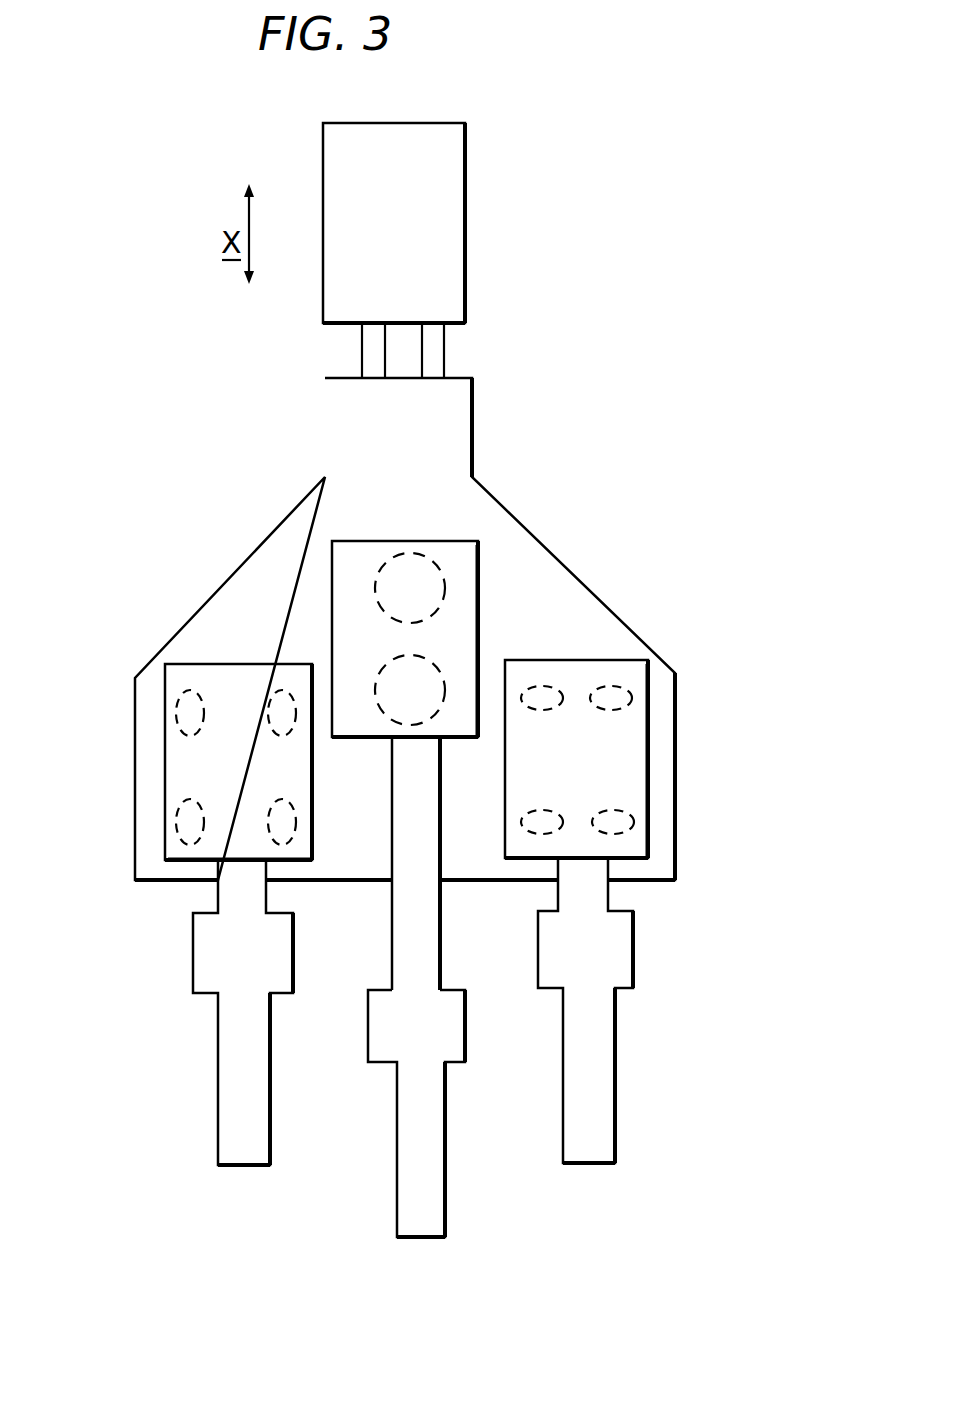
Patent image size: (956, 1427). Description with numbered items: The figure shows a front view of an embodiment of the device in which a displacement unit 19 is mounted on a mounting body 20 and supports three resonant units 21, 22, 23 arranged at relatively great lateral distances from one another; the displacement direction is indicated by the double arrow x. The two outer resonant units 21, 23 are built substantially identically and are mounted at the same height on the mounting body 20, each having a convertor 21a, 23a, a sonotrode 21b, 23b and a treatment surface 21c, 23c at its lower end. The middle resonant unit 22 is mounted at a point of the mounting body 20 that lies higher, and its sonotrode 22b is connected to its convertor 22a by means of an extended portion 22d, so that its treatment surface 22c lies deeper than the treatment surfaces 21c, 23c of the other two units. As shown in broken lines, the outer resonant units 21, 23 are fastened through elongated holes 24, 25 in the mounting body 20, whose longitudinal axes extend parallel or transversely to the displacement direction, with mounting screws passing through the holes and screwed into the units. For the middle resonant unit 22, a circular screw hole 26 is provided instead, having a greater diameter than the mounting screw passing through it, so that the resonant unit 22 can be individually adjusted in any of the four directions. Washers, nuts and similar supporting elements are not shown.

The displacement unit 19 is at (482, 205).
The mounting body 20 is at (590, 627).
The resonant unit 21 is at (158, 773).
The convertor 21a is at (215, 840).
The sonotrode 21b is at (237, 1041).
The treatment surface 21c is at (243, 1170).
The resonant unit 22 is at (322, 611).
The convertor 22a is at (453, 647).
The sonotrode 22b is at (430, 1093).
The treatment surface 22c is at (437, 1242).
The extended portion 22d is at (425, 905).
The resonant unit 23 is at (660, 733).
The convertor 23a is at (617, 787).
The sonotrode 23b is at (607, 1048).
The treatment surface 23c is at (595, 1172).
The elongated holes 24 is at (166, 696).
The elongated holes 25 is at (625, 685).
The circular screw hole 26 is at (401, 562).